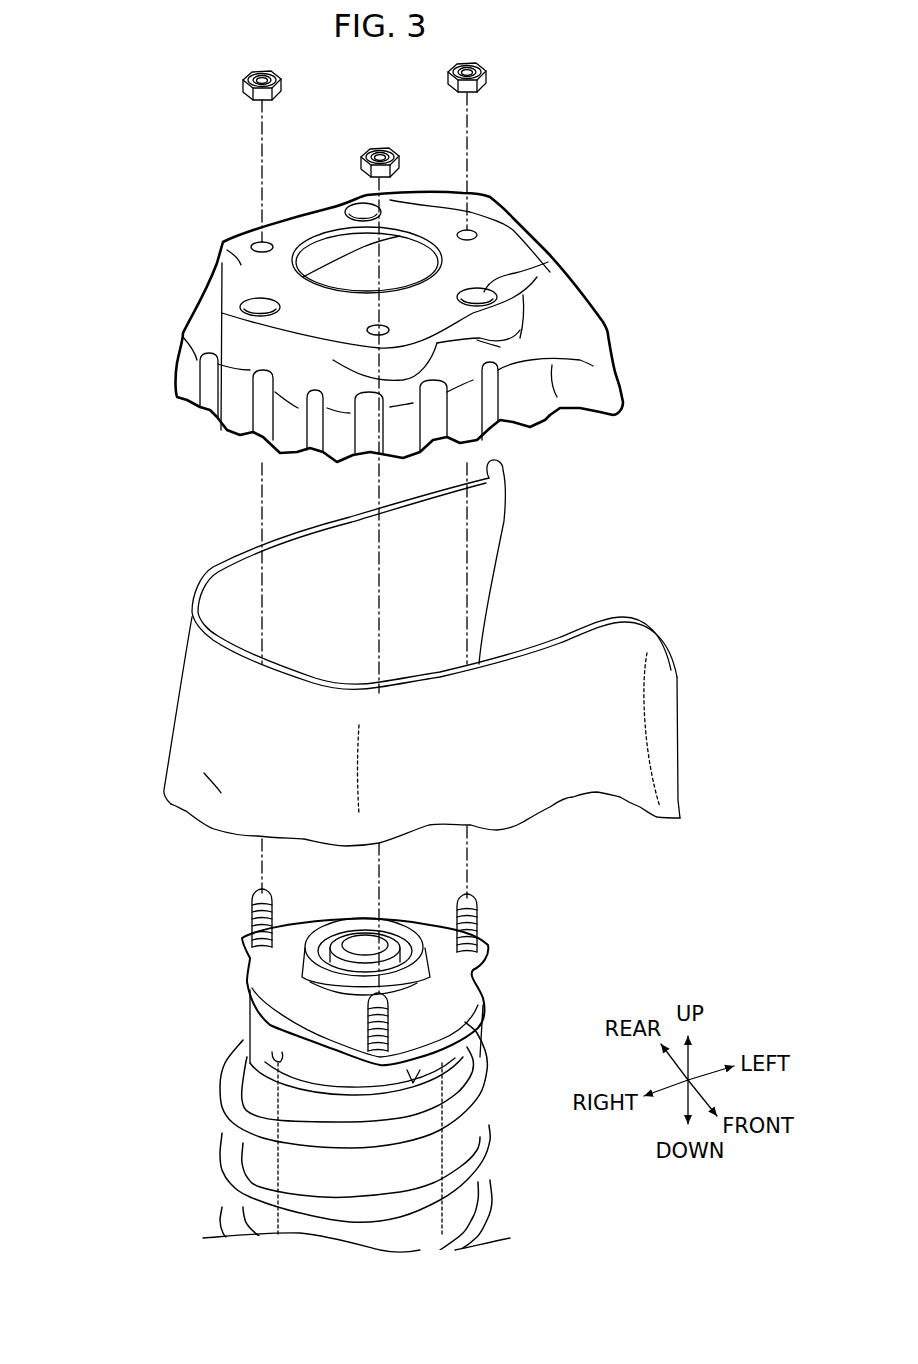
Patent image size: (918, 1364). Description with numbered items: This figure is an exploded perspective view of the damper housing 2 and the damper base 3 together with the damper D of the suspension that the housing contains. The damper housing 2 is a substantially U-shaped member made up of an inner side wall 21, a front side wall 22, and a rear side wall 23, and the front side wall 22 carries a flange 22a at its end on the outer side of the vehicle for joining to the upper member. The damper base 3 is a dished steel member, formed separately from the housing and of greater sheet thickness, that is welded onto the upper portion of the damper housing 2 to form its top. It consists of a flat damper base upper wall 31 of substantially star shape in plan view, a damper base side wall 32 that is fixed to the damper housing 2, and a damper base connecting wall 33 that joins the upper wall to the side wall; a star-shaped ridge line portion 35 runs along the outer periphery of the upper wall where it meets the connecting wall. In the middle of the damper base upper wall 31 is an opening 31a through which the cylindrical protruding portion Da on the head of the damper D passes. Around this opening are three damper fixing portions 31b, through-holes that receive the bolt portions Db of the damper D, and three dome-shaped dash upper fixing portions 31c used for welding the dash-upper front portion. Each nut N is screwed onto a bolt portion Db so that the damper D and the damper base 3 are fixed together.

The nut N is at (282, 77).
The damper base 3 is at (620, 366).
The damper base upper wall 31 is at (226, 244).
The opening 31a is at (328, 233).
The damper fixing portions 31b is at (467, 229).
The dash upper fixing portions 31c is at (533, 276).
The damper base side wall 32 is at (185, 377).
The damper base connecting wall 33 is at (194, 313).
The ridge line portion 35 is at (254, 227).
The damper housing 2 is at (608, 620).
The inner side wall 21 is at (220, 773).
The front side wall 22 is at (557, 787).
The flange 22a is at (665, 727).
The rear side wall 23 is at (208, 570).
The damper D is at (198, 1069).
The cylindrical protruding portion Da is at (423, 963).
The bolt portions Db is at (250, 917).